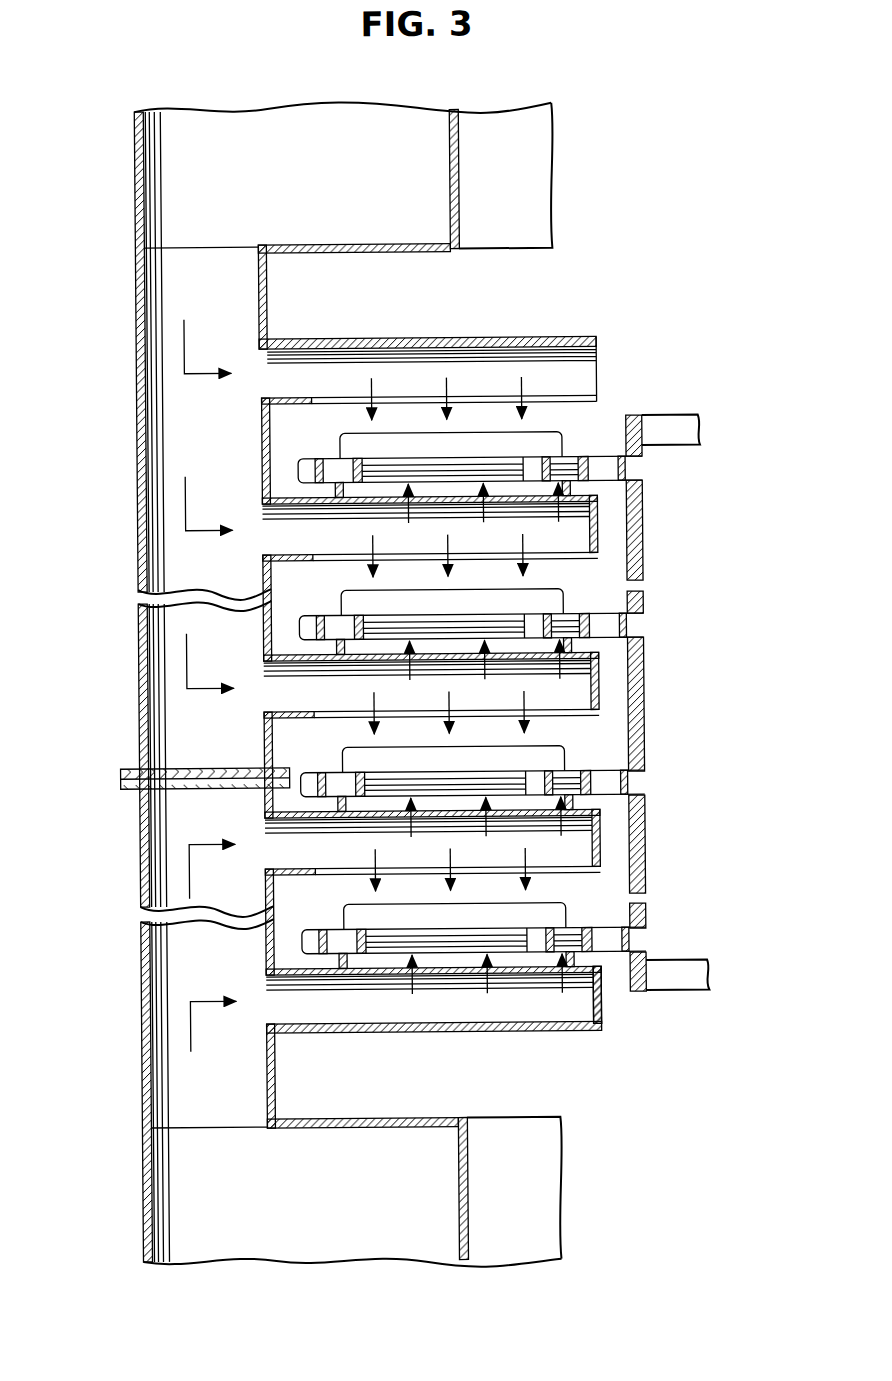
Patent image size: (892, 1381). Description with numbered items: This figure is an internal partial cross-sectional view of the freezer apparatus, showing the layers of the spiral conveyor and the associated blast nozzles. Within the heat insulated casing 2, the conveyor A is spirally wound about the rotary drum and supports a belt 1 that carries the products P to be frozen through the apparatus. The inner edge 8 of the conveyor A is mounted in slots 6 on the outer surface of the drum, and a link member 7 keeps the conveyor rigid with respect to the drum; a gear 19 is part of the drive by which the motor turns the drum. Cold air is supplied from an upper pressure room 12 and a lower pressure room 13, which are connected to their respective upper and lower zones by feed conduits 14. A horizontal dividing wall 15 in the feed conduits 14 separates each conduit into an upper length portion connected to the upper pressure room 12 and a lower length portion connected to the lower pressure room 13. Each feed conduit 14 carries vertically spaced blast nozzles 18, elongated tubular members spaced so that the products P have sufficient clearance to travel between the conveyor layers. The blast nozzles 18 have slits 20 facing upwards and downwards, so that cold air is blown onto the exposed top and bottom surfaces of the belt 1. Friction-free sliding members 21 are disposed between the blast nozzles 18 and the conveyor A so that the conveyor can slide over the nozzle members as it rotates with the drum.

The belt 1 is at (580, 460).
The heat insulated casing 2 is at (688, 436).
The slots 6 is at (644, 605).
The link member 7 is at (598, 1005).
The inner edge 8 is at (636, 940).
The upper pressure room 12 is at (218, 128).
The lower pressure room 13 is at (355, 1230).
The feed conduits 14 is at (138, 297).
The horizontal dividing wall 15 is at (185, 788).
The blast nozzles 18 is at (608, 686).
The gear 19 is at (602, 858).
The slits 20 is at (320, 554).
The friction-free sliding members 21 is at (563, 962).
The products P is at (408, 443).
The conveyor A is at (338, 758).